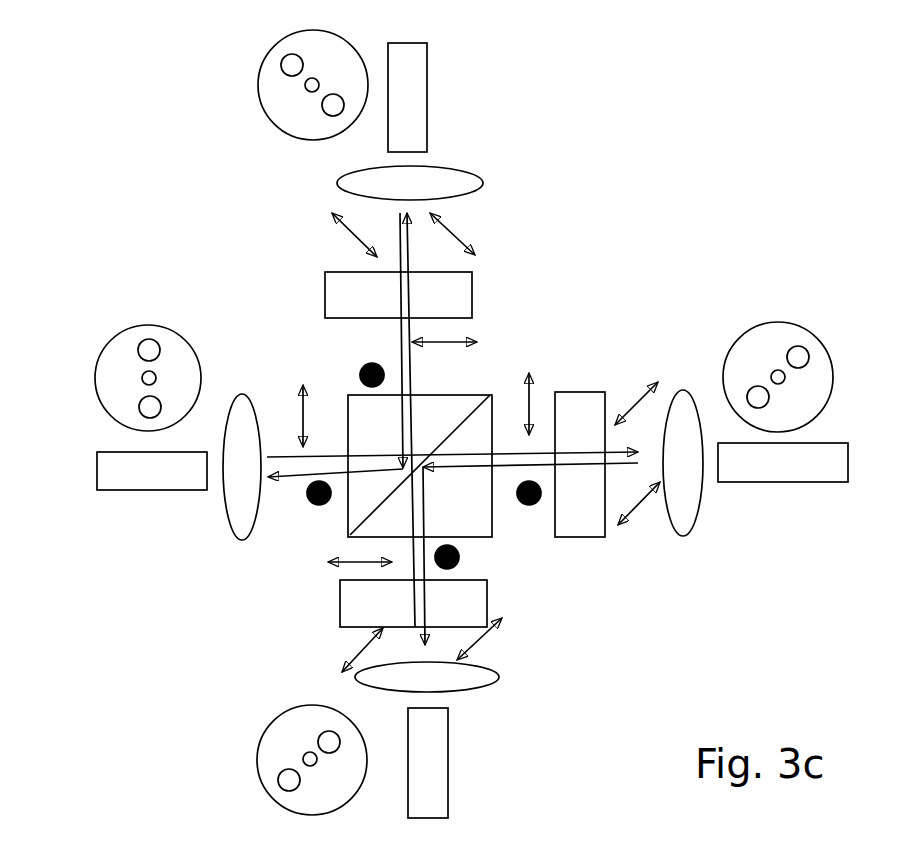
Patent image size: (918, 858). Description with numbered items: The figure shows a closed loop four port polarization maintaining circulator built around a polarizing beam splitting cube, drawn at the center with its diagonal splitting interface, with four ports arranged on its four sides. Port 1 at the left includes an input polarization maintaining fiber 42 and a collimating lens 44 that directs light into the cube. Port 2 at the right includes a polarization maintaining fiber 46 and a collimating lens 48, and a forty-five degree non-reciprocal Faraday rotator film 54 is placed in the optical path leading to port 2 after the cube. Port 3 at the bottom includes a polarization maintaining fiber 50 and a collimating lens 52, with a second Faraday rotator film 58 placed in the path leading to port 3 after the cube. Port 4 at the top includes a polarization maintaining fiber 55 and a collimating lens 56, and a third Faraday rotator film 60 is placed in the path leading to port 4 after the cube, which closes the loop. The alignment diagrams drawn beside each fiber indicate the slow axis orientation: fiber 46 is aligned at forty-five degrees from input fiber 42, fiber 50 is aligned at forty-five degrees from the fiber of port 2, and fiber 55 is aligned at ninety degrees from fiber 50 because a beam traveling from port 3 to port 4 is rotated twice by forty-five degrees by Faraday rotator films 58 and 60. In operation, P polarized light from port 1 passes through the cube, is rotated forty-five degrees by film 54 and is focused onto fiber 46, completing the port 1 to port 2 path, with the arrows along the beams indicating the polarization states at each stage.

The port 1 is at (117, 407).
The port 2 is at (807, 399).
The port 3 is at (373, 760).
The port 4 is at (368, 85).
The input polarization maintaining fiber 42 is at (132, 478).
The collimating lens 44 is at (242, 527).
The polarization maintaining fiber 46 is at (833, 468).
The collimating lens 48 is at (685, 505).
The polarization maintaining fiber 50 is at (430, 780).
The collimating lens 52 is at (477, 678).
The Faraday rotator film 54 is at (583, 527).
The polarization maintaining fiber 55 is at (403, 82).
The collimating lens 56 is at (452, 178).
The second Faraday rotator film 58 is at (355, 608).
The third Faraday rotator film 60 is at (463, 297).